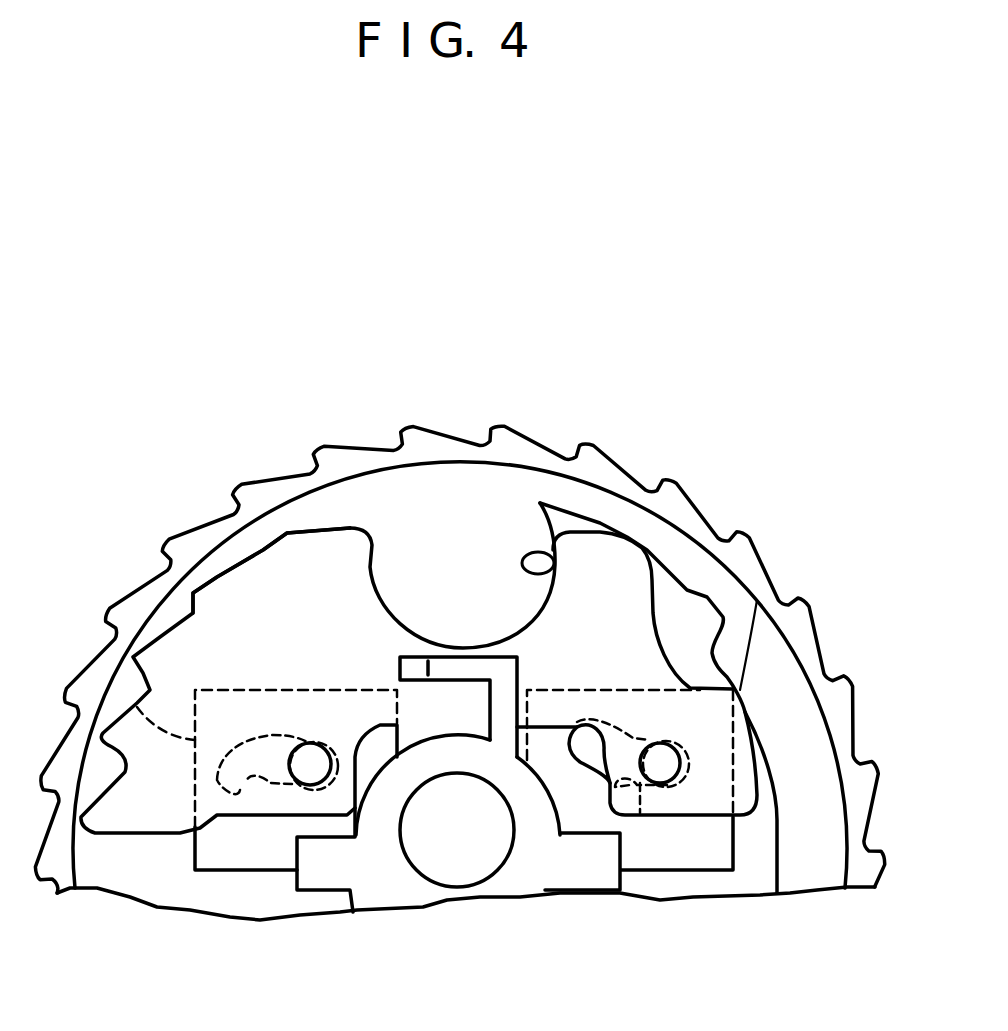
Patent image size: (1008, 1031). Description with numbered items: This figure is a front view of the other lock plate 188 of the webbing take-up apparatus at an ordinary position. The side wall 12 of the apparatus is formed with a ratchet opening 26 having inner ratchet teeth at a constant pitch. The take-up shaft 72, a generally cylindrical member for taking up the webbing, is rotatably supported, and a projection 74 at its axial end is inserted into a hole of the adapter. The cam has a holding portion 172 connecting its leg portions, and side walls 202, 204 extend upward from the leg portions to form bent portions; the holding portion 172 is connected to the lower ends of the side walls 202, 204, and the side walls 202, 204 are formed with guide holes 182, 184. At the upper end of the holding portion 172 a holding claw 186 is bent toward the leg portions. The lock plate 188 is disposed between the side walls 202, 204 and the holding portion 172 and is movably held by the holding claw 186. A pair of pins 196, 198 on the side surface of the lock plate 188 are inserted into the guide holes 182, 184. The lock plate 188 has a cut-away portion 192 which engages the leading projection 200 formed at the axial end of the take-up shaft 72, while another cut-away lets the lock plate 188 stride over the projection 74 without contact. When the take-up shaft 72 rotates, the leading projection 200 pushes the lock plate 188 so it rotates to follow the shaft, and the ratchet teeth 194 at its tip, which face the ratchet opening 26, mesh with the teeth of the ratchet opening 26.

The side wall 12 is at (537, 353).
The ratchet opening 26 is at (615, 463).
The take-up shaft 72 is at (793, 645).
The projection 74 is at (460, 850).
The holding portion 172 is at (377, 880).
The guide hole 182 is at (237, 797).
The guide hole 184 is at (640, 817).
The holding claw 186 is at (403, 660).
The lock plate 188 is at (133, 840).
The cut-away portion 192 is at (542, 553).
The ratchet teeth 194 is at (160, 640).
The pin 196 is at (307, 770).
The pin 198 is at (659, 770).
The leading projection 200 is at (417, 540).
The side wall 202 is at (137, 707).
The side wall 204 is at (758, 600).